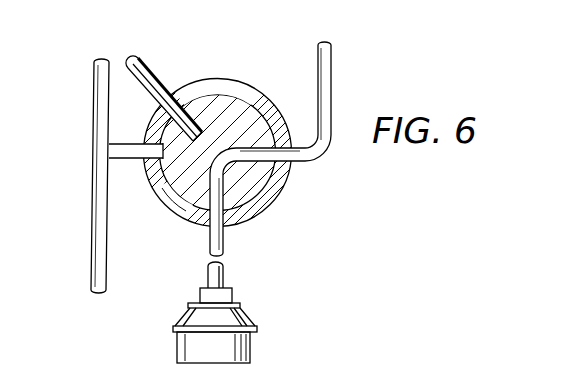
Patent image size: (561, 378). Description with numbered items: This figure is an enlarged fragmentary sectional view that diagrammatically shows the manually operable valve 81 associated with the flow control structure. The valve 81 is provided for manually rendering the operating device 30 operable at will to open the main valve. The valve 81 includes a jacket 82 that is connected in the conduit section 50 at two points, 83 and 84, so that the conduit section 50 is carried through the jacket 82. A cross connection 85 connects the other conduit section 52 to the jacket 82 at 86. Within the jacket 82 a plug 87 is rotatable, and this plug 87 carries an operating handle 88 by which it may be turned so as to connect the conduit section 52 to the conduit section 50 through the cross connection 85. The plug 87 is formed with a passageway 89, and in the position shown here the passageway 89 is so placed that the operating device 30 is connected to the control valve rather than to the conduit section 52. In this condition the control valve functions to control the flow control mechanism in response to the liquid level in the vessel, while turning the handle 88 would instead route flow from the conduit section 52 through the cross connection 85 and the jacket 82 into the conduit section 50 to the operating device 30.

The operating device 30 is at (263, 342).
The conduit section 50 is at (332, 62).
The conduit section 52 is at (93, 203).
The valve 81 is at (205, 58).
The jacket 82 is at (273, 207).
The connection point 83 is at (298, 162).
The connection point 84 is at (202, 222).
The cross connection 85 is at (126, 144).
The connection point 86 is at (141, 163).
The plug 87 is at (231, 100).
The operating handle 88 is at (152, 75).
The passageway 89 is at (222, 172).